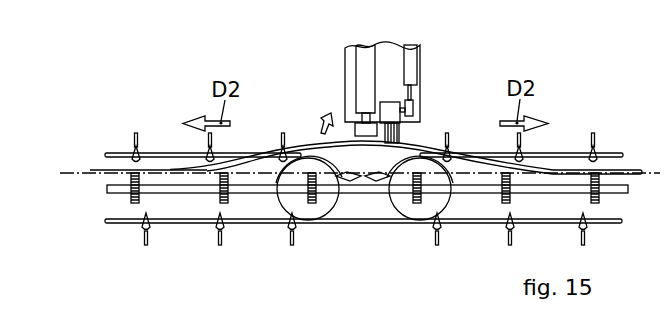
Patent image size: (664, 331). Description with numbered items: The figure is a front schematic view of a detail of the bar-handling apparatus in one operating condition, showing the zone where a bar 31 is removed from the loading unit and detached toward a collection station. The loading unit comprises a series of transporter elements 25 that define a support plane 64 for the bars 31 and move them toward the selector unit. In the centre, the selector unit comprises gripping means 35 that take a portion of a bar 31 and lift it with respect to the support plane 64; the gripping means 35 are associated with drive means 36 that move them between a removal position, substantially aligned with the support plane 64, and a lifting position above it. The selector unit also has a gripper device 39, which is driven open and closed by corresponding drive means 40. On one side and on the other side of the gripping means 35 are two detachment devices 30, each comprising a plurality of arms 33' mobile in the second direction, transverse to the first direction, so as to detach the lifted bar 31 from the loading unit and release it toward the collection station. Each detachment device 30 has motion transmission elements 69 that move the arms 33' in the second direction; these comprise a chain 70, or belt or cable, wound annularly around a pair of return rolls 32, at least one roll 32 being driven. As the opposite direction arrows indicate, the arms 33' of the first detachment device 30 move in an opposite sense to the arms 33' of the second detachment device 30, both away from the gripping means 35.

The transporter elements 25 is at (134, 204).
The detachment device 30 is at (175, 120).
The bars 31 is at (481, 154).
The return rolls 32 is at (312, 211).
The arms 33' is at (377, 183).
The gripping means 35 is at (354, 134).
The drive means 36 is at (352, 56).
The gripper device 39 is at (402, 140).
The drive means 40 is at (410, 64).
The support plane 64 is at (87, 162).
The motion transmission elements 69 is at (113, 153).
The chain 70 is at (182, 222).